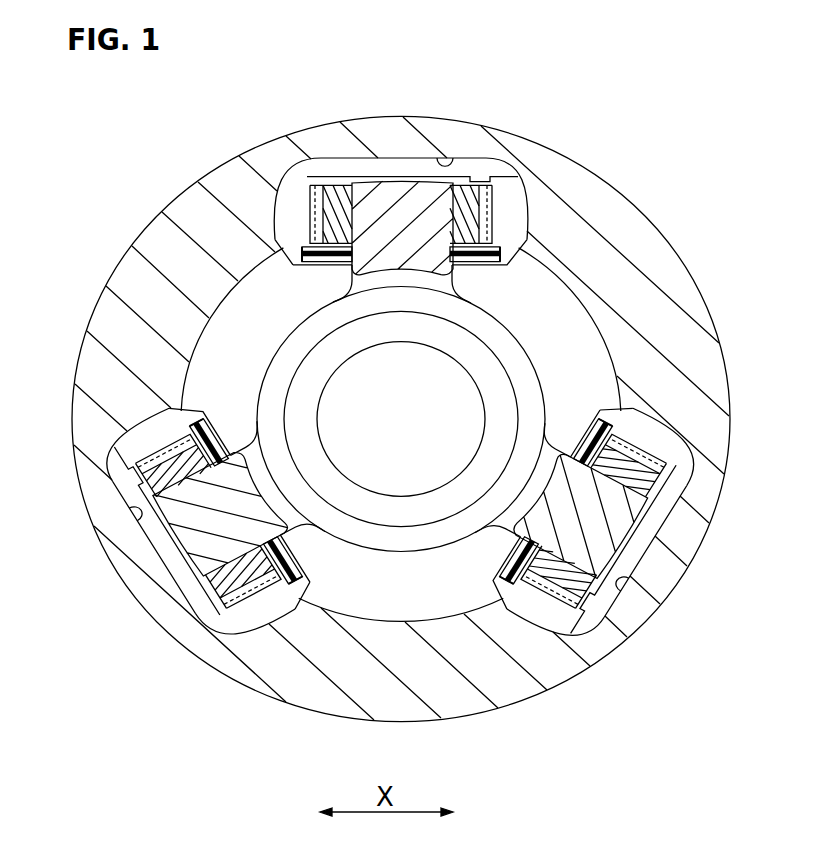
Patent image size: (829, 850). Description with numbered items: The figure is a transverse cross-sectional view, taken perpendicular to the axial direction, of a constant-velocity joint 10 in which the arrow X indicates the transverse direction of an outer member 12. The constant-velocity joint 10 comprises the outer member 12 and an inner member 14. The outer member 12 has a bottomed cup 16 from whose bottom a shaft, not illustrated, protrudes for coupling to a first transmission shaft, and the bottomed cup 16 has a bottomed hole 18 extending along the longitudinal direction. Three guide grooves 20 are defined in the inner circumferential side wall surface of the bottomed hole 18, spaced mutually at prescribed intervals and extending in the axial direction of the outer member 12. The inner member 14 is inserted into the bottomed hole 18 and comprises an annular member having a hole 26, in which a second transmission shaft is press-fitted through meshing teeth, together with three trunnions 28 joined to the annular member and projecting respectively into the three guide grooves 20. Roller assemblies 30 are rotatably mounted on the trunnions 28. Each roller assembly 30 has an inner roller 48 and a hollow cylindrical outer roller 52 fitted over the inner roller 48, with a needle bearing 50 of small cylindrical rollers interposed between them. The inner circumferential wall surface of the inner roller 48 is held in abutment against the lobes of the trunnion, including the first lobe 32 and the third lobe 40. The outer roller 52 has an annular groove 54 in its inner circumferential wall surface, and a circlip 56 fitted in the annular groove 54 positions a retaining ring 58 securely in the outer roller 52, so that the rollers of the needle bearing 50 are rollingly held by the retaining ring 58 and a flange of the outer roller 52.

The constant-velocity joint 10 is at (293, 122).
The outer member 12 is at (415, 712).
The inner member 14 is at (523, 338).
The bottomed cup 16 is at (380, 620).
The bottomed hole 18 is at (223, 300).
The guide grooves 20 is at (445, 163).
The hole 26 is at (332, 375).
The trunnions 28 is at (384, 190).
The roller assemblies 30 is at (492, 172).
The first lobe 32 is at (320, 216).
The third lobe 40 is at (503, 252).
The inner roller 48 is at (338, 200).
The needle bearing 50 is at (317, 205).
The outer roller 52 is at (528, 194).
The annular groove 54 is at (494, 260).
The circlip 56 is at (338, 262).
The retaining ring 58 is at (467, 260).